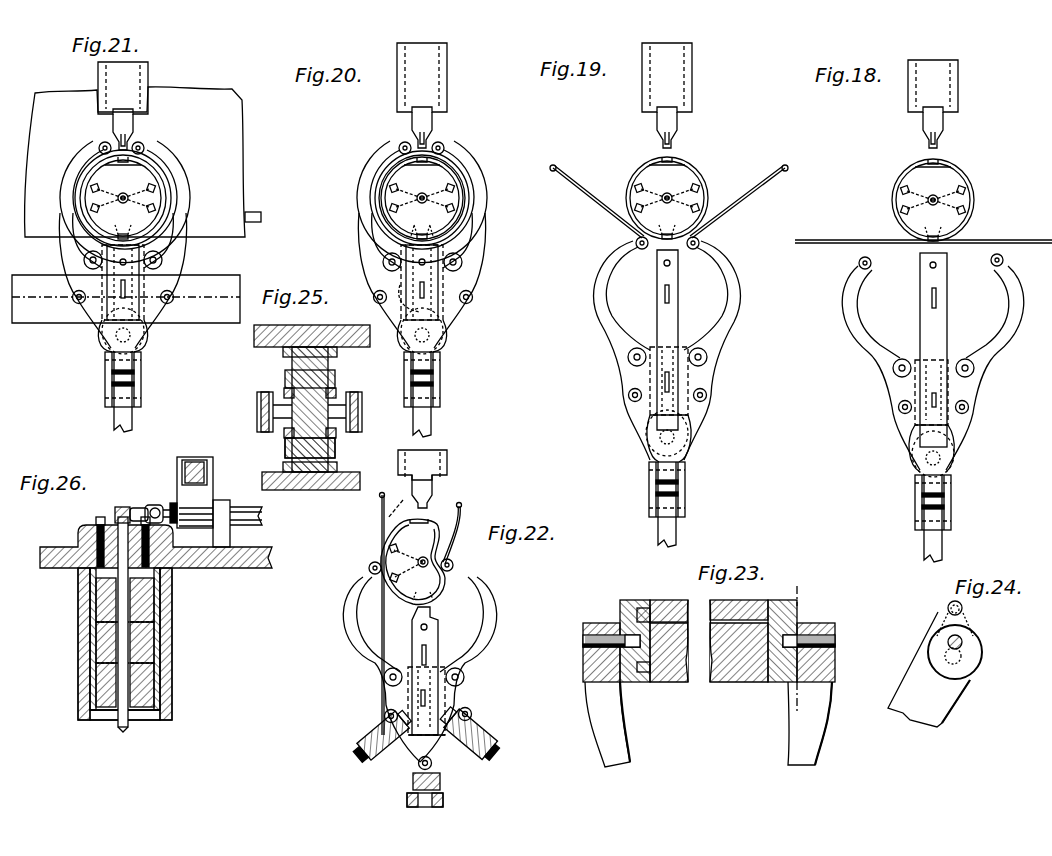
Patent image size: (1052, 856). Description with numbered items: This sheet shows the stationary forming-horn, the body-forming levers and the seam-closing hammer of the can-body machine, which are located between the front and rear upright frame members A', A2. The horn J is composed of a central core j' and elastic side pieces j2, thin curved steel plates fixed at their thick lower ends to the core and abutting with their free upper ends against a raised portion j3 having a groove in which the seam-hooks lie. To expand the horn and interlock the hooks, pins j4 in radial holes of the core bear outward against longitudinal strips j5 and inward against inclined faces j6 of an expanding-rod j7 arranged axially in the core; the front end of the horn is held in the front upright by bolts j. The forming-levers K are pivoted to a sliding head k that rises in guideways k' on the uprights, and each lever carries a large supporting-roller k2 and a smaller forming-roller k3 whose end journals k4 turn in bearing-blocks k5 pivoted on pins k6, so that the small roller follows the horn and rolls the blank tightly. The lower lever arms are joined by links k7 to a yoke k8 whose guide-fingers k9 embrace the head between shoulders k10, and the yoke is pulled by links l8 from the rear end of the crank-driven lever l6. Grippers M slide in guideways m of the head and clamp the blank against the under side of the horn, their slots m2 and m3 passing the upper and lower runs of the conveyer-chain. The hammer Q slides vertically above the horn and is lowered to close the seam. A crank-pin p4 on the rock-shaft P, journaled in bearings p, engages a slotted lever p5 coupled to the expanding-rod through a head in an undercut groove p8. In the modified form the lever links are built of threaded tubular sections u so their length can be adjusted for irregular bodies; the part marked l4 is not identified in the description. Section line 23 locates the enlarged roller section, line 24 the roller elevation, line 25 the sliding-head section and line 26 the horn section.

In FIG. 21, the hammer Q is at (123, 106).
In FIG. 20, the hammer Q is at (422, 95).
In FIG. 19, the hammer Q is at (667, 95).
In FIG. 18, the hammer Q is at (933, 104).
In FIG. 22, the hammer Q is at (430, 479).
In FIG. 21, the horn J is at (123, 198).
In FIG. 20, the horn J is at (422, 198).
In FIG. 19, the horn J is at (667, 198).
In FIG. 18, the horn J is at (933, 200).
In FIG. 26, the horn J is at (162, 648).
In FIG. 22, the horn J is at (421, 614).
In FIG. 20, the central core j' is at (422, 227).
In FIG. 19, the central core j' is at (663, 221).
In FIG. 18, the central core j' is at (929, 221).
In FIG. 20, the elastic side pieces j2 is at (378, 200).
In FIG. 19, the elastic side pieces j2 is at (630, 190).
In FIG. 18, the elastic side pieces j2 is at (905, 232).
In FIG. 19, the raised portion j3 is at (684, 163).
In FIG. 18, the raised portion j3 is at (952, 163).
In FIG. 19, the longitudinal strips j5 is at (641, 176).
In FIG. 18, the longitudinal strips j5 is at (896, 188).
In FIG. 26, the longitudinal strips j5 is at (90, 686).
In FIG. 18, the expanding-rod j7 is at (940, 201).
In FIG. 26, the expanding-rod j7 is at (123, 730).
In FIG. 26, the bolts j is at (110, 535).
In FIG. 26, the pins j4 is at (96, 636).
In FIG. 26, the inclined faces j6 is at (155, 626).
In FIG. 21, the forming-levers K is at (68, 238).
In FIG. 20, the forming-levers K is at (368, 238).
In FIG. 19, the forming-levers K is at (602, 312).
In FIG. 18, the forming-levers K is at (858, 346).
In FIG. 22, the forming-levers K is at (348, 636).
In FIG. 23, the forming-levers K is at (624, 740).
In FIG. 24, the forming-levers K is at (929, 669).
In FIG. 20, the sliding head k is at (407, 282).
In FIG. 25, the sliding head k is at (320, 409).
In FIG. 19, the sliding head k is at (652, 381).
In FIG. 18, the sliding head k is at (920, 392).
In FIG. 22, the sliding head k is at (408, 701).
In FIG. 25, the guideways k' is at (308, 410).
In FIG. 20, the supporting-roller k2 is at (398, 148).
In FIG. 19, the supporting-roller k2 is at (667, 243).
In FIG. 18, the supporting-roller k2 is at (870, 268).
In FIG. 23, the supporting-roller k2 is at (672, 683).
In FIG. 24, the supporting-roller k2 is at (983, 651).
In FIG. 18, the forming-roller k3 is at (858, 262).
In FIG. 23, the forming-roller k3 is at (660, 605).
In FIG. 24, the forming-roller k3 is at (948, 606).
In FIG. 20, the end journals k4 is at (466, 296).
In FIG. 23, the end journals k4 is at (641, 608).
In FIG. 23, the bearing-blocks k5 is at (620, 612).
In FIG. 24, the bearing-blocks k5 is at (945, 624).
In FIG. 23, the pins k6 is at (838, 643).
In FIG. 24, the pins k6 is at (962, 641).
In FIG. 21, the links k7 is at (80, 306).
In FIG. 20, the links k7 is at (472, 312).
In FIG. 25, the links k7 is at (257, 412).
In FIG. 19, the links k7 is at (628, 415).
In FIG. 18, the links k7 is at (969, 410).
In FIG. 22, the links k7 is at (462, 746).
In FIG. 21, the yoke k8 is at (106, 352).
In FIG. 20, the yoke k8 is at (445, 346).
In FIG. 19, the yoke k8 is at (688, 450).
In FIG. 18, the yoke k8 is at (950, 468).
In FIG. 22, the yoke k8 is at (413, 780).
In FIG. 21, the guide-fingers k9 is at (108, 335).
In FIG. 25, the guide-fingers k9 is at (336, 390).
In FIG. 19, the guide-fingers k9 is at (652, 434).
In FIG. 18, the guide-fingers k9 is at (950, 436).
In FIG. 25, the shoulders k10 is at (284, 388).
In FIG. 22, the lower roller l4 is at (407, 803).
In FIG. 21, the lever l6 is at (133, 419).
In FIG. 20, the lever l6 is at (432, 420).
In FIG. 19, the lever l6 is at (678, 525).
In FIG. 18, the lever l6 is at (943, 545).
In FIG. 21, the links l8 is at (105, 380).
In FIG. 20, the links l8 is at (406, 380).
In FIG. 19, the links l8 is at (688, 490).
In FIG. 18, the links l8 is at (915, 503).
In FIG. 21, the gripping devices M is at (123, 282).
In FIG. 25, the gripping devices M is at (312, 345).
In FIG. 19, the gripping devices M is at (678, 330).
In FIG. 18, the gripping devices M is at (946, 344).
In FIG. 22, the gripping devices M is at (412, 645).
In FIG. 20, the guideways m is at (422, 282).
In FIG. 25, the guideways m is at (288, 503).
In FIG. 19, the guideways m is at (670, 392).
In FIG. 18, the guideways m is at (948, 396).
In FIG. 19, the slots m2 is at (662, 257).
In FIG. 18, the slots m2 is at (928, 266).
In FIG. 19, the slots m3 is at (672, 292).
In FIG. 18, the slots m3 is at (940, 298).
In FIG. 22, the tubular threaded sections u is at (362, 740).
In FIG. 21, the front upright frame member A' is at (136, 205).
In FIG. 25, the front upright frame member A' is at (243, 340).
In FIG. 26, the front upright frame member A' is at (150, 546).
In FIG. 25, the rear upright frame member A2 is at (373, 486).
In FIG. 22, the rear upright frame member A2 is at (395, 509).
In FIG. 26, the bearings p is at (216, 503).
In FIG. 26, the rock-shaft P is at (246, 523).
In FIG. 26, the crank-pin p4 is at (158, 507).
In FIG. 26, the lever p5 is at (139, 507).
In FIG. 26, the undercut vertical groove p8 is at (120, 507).
In FIG. 18, the section line 23 is at (860, 254).
In FIG. 23, the section line 24 is at (793, 646).
In FIG. 21, the section line 25 is at (126, 296).
In FIG. 21, the section line 26 is at (168, 179).